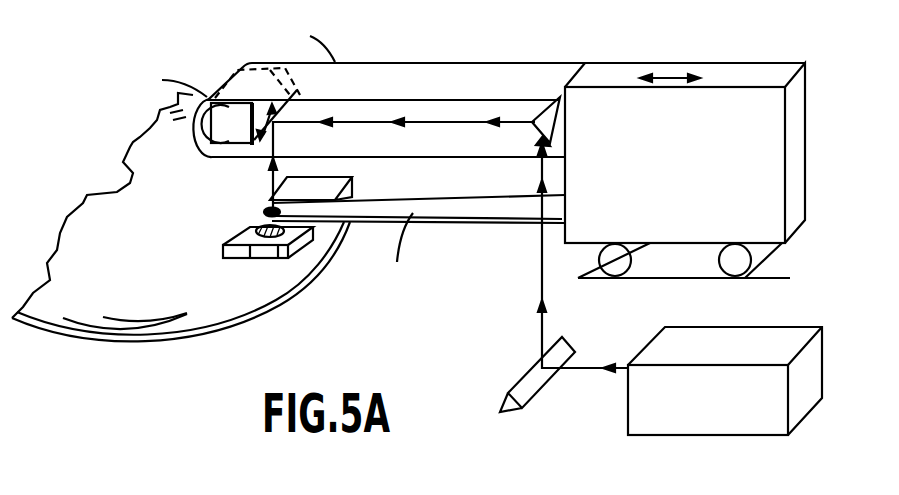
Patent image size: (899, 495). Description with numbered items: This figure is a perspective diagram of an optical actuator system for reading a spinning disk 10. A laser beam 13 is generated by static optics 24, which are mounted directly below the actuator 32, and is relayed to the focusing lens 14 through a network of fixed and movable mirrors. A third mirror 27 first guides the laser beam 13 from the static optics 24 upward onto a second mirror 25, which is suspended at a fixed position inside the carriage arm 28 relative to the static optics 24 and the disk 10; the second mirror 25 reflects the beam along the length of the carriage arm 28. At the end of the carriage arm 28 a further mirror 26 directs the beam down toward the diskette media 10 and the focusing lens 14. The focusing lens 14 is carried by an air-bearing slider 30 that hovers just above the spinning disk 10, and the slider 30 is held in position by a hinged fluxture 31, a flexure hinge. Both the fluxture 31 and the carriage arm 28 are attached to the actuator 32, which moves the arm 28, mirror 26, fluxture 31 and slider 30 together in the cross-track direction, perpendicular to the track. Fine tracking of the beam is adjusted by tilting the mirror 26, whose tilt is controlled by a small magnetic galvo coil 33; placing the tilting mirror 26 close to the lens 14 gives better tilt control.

The disk 10 is at (228, 308).
The laser beam 13 is at (272, 162).
The focusing lens 14 is at (258, 214).
The static optics 24 is at (712, 435).
The second mirror 25 is at (535, 130).
The mirror 26 is at (287, 121).
The third mirror 27 is at (540, 393).
The carriage arm 28 is at (457, 62).
The air-bearing slider 30 is at (258, 258).
The fluxture 31 is at (452, 223).
The actuator 32 is at (807, 167).
The magnetic galvo coil 33 is at (167, 129).